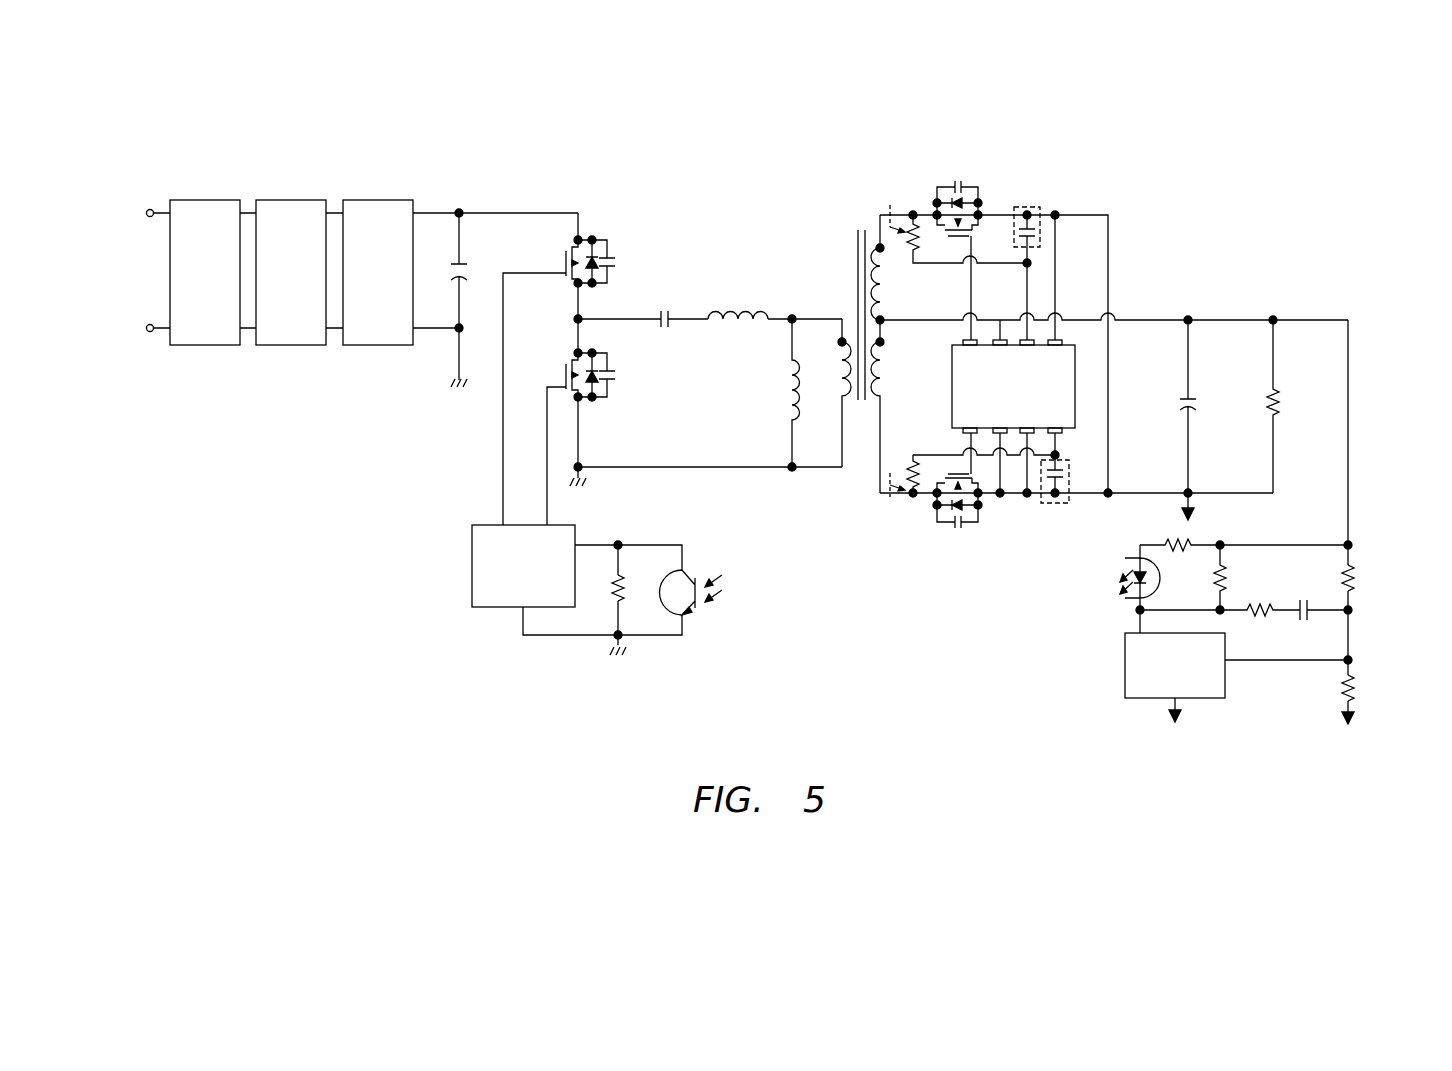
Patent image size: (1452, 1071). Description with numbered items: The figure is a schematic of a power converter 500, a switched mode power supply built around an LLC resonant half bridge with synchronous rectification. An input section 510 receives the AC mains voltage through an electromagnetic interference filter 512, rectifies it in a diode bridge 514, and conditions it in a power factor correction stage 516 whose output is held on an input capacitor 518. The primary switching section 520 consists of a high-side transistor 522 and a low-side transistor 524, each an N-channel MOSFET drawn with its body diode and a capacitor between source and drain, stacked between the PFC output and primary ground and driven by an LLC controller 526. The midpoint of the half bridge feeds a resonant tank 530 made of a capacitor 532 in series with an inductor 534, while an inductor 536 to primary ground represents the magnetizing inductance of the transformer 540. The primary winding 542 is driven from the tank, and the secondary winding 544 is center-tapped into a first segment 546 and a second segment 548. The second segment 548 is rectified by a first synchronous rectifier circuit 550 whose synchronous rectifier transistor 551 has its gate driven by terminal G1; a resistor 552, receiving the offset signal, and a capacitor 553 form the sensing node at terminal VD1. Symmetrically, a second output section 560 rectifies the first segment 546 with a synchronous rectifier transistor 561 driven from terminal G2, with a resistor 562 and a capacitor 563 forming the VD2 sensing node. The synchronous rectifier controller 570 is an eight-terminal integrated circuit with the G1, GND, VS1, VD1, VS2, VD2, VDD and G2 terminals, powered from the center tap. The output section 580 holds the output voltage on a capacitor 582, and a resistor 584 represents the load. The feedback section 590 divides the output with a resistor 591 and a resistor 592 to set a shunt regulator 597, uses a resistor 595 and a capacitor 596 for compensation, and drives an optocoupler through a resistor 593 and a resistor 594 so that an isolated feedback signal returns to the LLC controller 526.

The power converter 500 is at (150, 125).
The input section 510 is at (150, 240).
The electromagnetic interference (EMI) filter 512 is at (200, 200).
The diode bridge 514 is at (277, 200).
The power factor correction (PFC) stage 516 is at (365, 200).
The input capacitor 518 is at (466, 266).
The primary switching section 520 is at (558, 200).
The high-side transistor 522 is at (572, 283).
The low-side transistor 524 is at (572, 358).
The LLC controller 526 is at (472, 568).
The resonant tank 530 is at (704, 280).
The capacitor 532 is at (662, 328).
The inductor 534 is at (745, 324).
The inductor 536 is at (788, 405).
The transformer 540 is at (850, 172).
The primary winding 542 is at (842, 338).
The secondary winding 544 is at (878, 226).
The first segment 546 is at (882, 292).
The second segment 548 is at (882, 374).
The first synchronous rectifier circuit 550 is at (912, 529).
The synchronous rectifier transistor 551 is at (962, 478).
The resistor 552 is at (913, 465).
The capacitor 553 is at (1068, 482).
The second output section 560 is at (1133, 193).
The synchronous rectifier transistor 561 is at (950, 240).
The resistor 562 is at (922, 245).
The capacitor 563 is at (1030, 230).
The synchronous rectifier controller 570 is at (1075, 398).
The output section 580 is at (1223, 291).
The capacitor 582 is at (1182, 400).
The resistor 584 is at (1280, 405).
The feedback section 590 is at (1385, 552).
The resistor 591 is at (1356, 580).
The resistor 592 is at (1356, 688).
The resistor 593 is at (1190, 542).
The resistor 594 is at (1227, 580).
The resistor 595 is at (1265, 615).
The capacitor 596 is at (1305, 615).
The shunt regulator 597 is at (1125, 652).